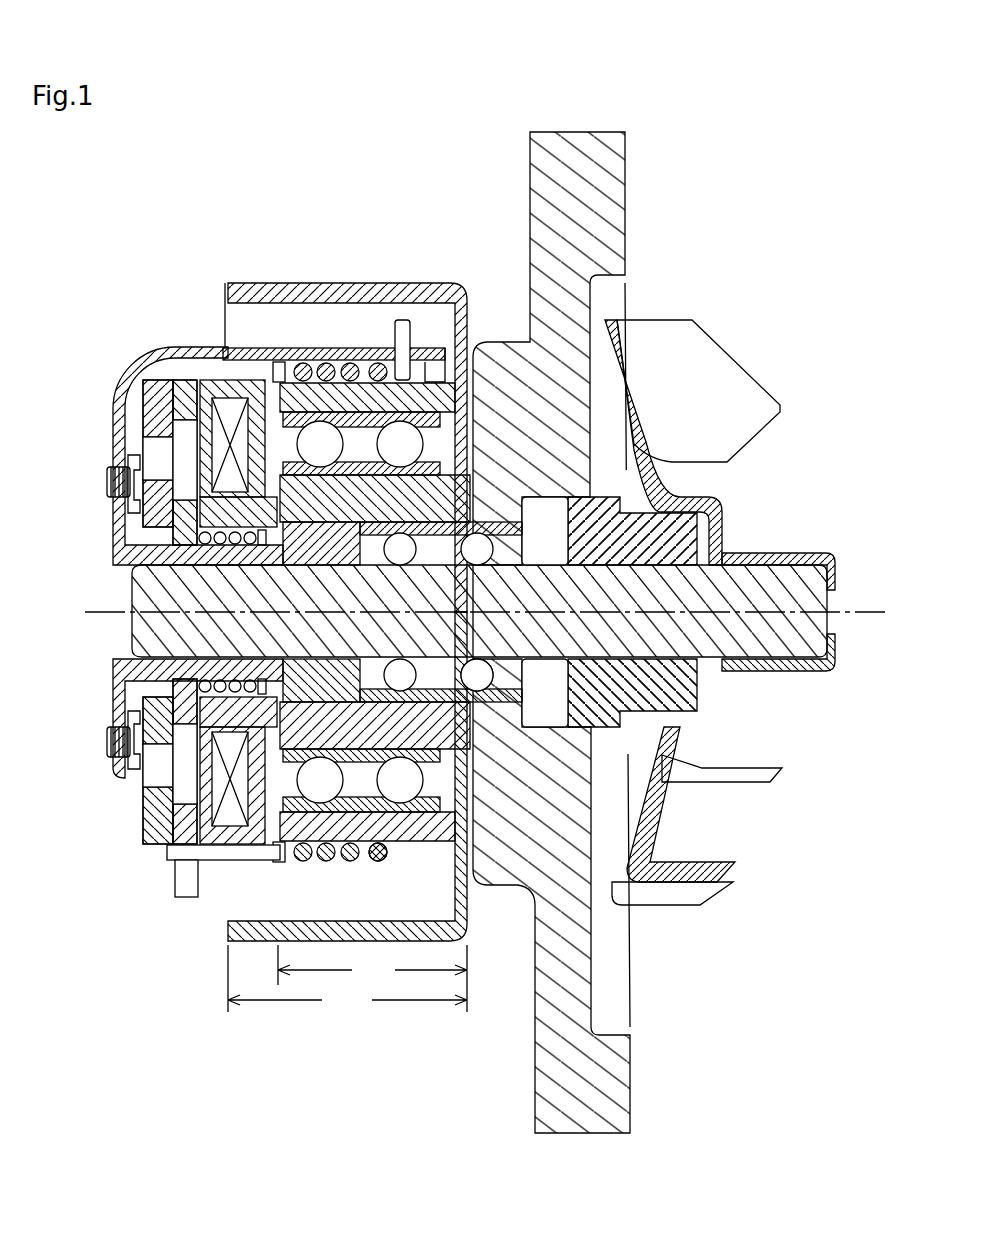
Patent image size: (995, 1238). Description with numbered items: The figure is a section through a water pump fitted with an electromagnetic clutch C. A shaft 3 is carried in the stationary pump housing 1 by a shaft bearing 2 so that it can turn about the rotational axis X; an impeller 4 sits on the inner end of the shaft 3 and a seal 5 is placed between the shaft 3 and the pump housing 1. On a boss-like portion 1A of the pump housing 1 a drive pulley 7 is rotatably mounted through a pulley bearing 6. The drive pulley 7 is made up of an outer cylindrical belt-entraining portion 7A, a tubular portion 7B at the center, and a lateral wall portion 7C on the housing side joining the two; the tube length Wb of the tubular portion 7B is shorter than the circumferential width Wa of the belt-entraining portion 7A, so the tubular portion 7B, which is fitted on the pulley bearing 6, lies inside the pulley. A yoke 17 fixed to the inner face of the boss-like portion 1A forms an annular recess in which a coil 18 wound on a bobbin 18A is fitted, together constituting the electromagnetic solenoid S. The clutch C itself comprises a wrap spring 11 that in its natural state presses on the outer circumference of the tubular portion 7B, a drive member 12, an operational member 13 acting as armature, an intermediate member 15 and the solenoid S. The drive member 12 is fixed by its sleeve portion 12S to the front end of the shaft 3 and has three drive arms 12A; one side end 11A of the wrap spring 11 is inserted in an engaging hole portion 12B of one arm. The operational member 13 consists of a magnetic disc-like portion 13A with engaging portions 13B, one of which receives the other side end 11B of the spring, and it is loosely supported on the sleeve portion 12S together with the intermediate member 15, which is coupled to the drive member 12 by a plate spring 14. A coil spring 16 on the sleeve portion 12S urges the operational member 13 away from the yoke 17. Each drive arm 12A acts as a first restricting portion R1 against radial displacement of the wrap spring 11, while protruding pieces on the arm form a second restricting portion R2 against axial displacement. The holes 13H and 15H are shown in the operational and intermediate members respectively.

The pump housing 1 is at (620, 196).
The boss-like portion 1A is at (420, 778).
The shaft bearing 2 is at (490, 548).
The shaft 3 is at (768, 662).
The impeller 4 is at (668, 330).
The seal 5 is at (700, 538).
The pulley bearing 6 is at (405, 808).
The drive pulley 7 is at (352, 268).
The belt-entraining portion 7A is at (258, 945).
The tubular portion 7B is at (345, 865).
The lateral wall portion 7C is at (465, 892).
The wrap spring 11 is at (382, 872).
The one side end 11A is at (406, 335).
The other side end 11B is at (185, 866).
The drive member 12 is at (112, 392).
The drive arms 12A is at (215, 350).
The engaging hole portion 12B is at (372, 350).
The sleeve portion 12S is at (160, 572).
The operational member 13 is at (168, 366).
The disc-like portion 13A is at (180, 848).
The engaging portions 13B is at (185, 900).
The hole 13H is at (180, 462).
The plate spring 14 is at (125, 500).
The intermediate member 15 is at (133, 818).
The hole 15H is at (155, 445).
The coil spring 16 is at (175, 525).
The yoke 17 is at (270, 441).
The coil 18 is at (270, 781).
The bobbin 18A is at (262, 842).
The electromagnetic solenoid S is at (222, 368).
The electromagnetic clutch C is at (108, 343).
The rotational axis X is at (468, 613).
The first restricting portion R1 is at (315, 364).
The second restricting portion R2 is at (283, 368).
The circumferential width Wa is at (347, 979).
The tube length Wb is at (372, 978).